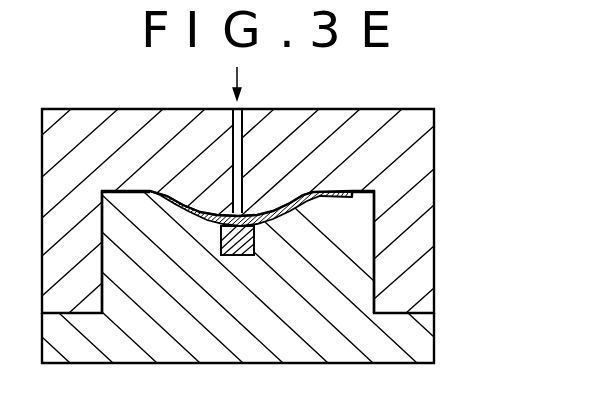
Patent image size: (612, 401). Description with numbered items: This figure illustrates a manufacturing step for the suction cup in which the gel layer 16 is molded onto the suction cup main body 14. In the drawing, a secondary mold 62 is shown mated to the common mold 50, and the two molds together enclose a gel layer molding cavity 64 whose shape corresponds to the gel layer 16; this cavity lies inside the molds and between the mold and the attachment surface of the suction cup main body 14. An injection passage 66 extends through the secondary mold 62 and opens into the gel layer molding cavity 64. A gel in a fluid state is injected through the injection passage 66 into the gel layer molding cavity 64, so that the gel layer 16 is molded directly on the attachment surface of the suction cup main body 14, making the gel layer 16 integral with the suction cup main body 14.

The secondary mold 62 is at (375, 110).
The common mold 50 is at (337, 352).
The injection passage 66 is at (243, 143).
The gel layer molding cavity 64 is at (342, 175).
The gel layer 16 is at (300, 193).
The suction cup main body 14 is at (257, 251).